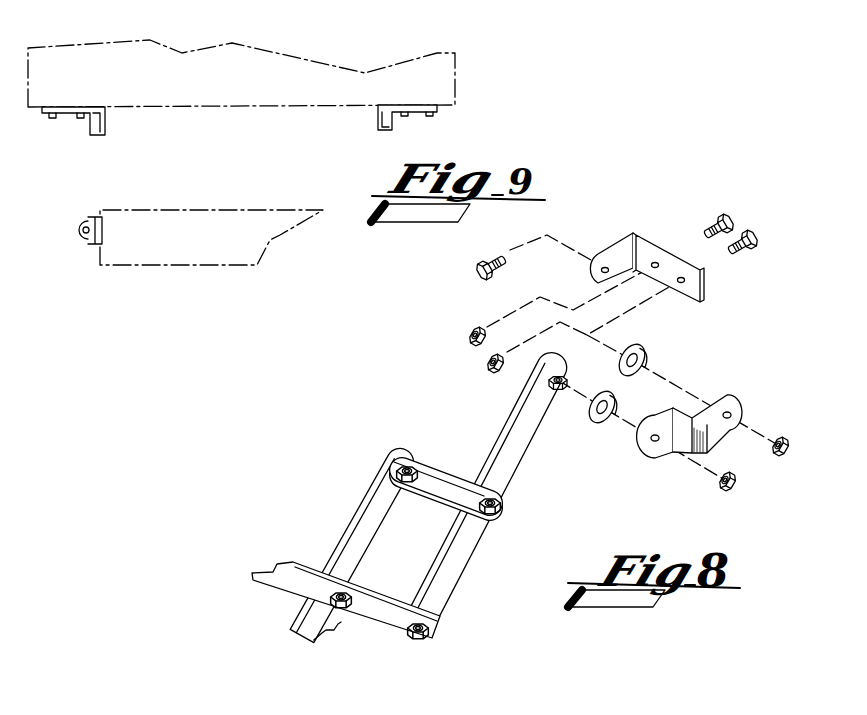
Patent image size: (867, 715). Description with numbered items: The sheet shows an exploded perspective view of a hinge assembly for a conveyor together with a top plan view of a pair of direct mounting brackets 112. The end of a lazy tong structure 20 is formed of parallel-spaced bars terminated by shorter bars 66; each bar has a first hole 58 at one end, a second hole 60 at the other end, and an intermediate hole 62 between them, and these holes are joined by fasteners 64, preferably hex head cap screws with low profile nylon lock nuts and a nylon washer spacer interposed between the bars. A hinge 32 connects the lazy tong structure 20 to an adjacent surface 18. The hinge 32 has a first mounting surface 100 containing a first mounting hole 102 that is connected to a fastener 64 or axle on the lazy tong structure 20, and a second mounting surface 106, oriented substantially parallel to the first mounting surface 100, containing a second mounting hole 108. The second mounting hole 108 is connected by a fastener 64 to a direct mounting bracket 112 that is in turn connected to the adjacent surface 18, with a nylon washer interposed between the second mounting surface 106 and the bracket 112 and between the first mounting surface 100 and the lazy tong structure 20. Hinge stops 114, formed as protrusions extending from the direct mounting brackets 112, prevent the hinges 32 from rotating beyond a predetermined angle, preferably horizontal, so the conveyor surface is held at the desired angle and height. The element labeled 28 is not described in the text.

In FIG. 9, the adjacent surface 18 is at (290, 70).
In FIG. 8, the lazy tong structure 20 is at (363, 500).
In FIG. 8, the foot plate 28 is at (263, 583).
In FIG. 8, the hinge 32 is at (707, 402).
In FIG. 8, the first hole 58 is at (422, 456).
In FIG. 8, the second hole 60 is at (430, 633).
In FIG. 8, the intermediate hole 62 is at (367, 597).
In FIG. 8, the fastener 64 is at (713, 210).
In FIG. 8, the shorter bar 66 is at (457, 473).
In FIG. 8, the first mounting surface 100 is at (656, 445).
In FIG. 8, the first mounting hole 102 is at (641, 458).
In FIG. 8, the second mounting surface 106 is at (717, 440).
In FIG. 8, the second mounting hole 108 is at (733, 418).
In FIG. 9, the direct mounting bracket 112 is at (433, 133).
In FIG. 8, the direct mounting bracket 112 is at (627, 232).
In FIG. 9, the hinge stop 114 is at (393, 130).